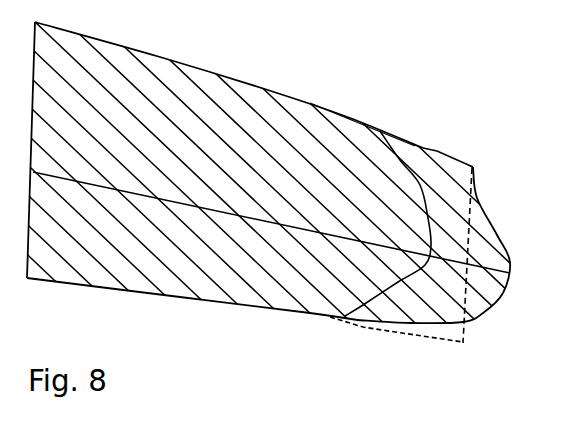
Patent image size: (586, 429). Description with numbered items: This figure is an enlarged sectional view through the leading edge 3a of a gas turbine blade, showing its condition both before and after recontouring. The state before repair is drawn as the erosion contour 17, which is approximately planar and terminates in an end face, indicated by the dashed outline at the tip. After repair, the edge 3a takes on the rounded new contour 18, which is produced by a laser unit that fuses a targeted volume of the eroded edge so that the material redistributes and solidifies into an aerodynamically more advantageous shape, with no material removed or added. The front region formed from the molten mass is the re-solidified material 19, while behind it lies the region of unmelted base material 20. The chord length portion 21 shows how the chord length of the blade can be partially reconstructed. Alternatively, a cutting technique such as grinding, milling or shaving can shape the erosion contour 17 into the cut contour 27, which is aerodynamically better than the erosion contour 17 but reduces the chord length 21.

The edge 3a is at (317, 213).
The erosion contour 17 is at (460, 157).
The new contour 18 is at (505, 240).
The re-solidified material 19 is at (480, 290).
The unmelted base material 20 is at (377, 235).
The chord length portion 21 is at (219, 205).
The cut contour 27 is at (420, 185).